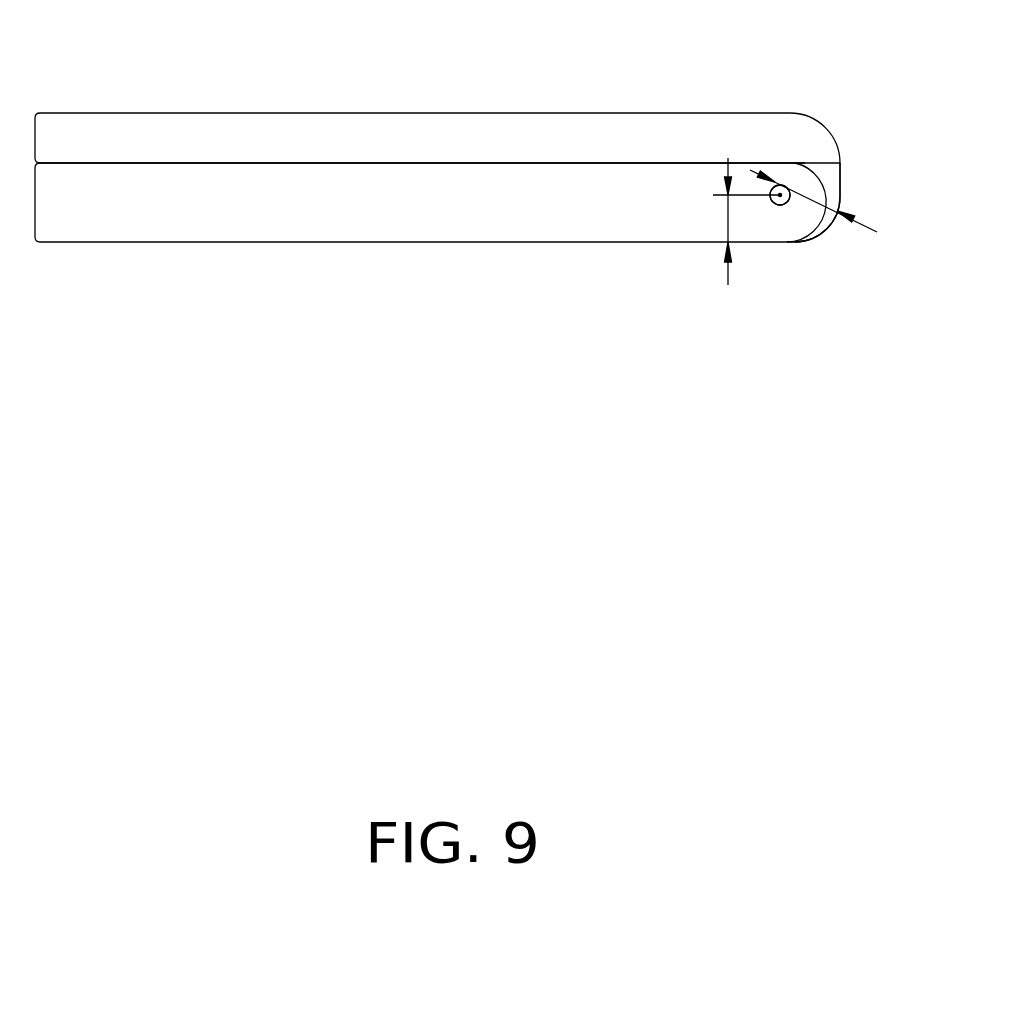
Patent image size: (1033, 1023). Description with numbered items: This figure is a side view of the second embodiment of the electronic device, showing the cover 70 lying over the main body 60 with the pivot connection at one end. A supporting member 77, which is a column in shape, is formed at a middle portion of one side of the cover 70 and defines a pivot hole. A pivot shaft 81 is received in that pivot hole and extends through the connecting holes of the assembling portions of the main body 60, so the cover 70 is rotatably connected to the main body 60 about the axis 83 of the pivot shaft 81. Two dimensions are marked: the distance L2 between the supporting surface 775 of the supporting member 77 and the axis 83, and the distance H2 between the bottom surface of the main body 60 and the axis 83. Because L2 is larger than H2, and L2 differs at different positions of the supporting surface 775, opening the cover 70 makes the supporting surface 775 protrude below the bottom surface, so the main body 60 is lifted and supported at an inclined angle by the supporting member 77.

The cover 70 is at (325, 133).
The main body 60 is at (322, 207).
The supporting member 77 is at (833, 182).
The supporting surface 775 is at (828, 222).
The pivot shaft 81 is at (776, 206).
The axis 83 is at (785, 205).
The distance H2 is at (746, 239).
The distance L2 is at (825, 201).